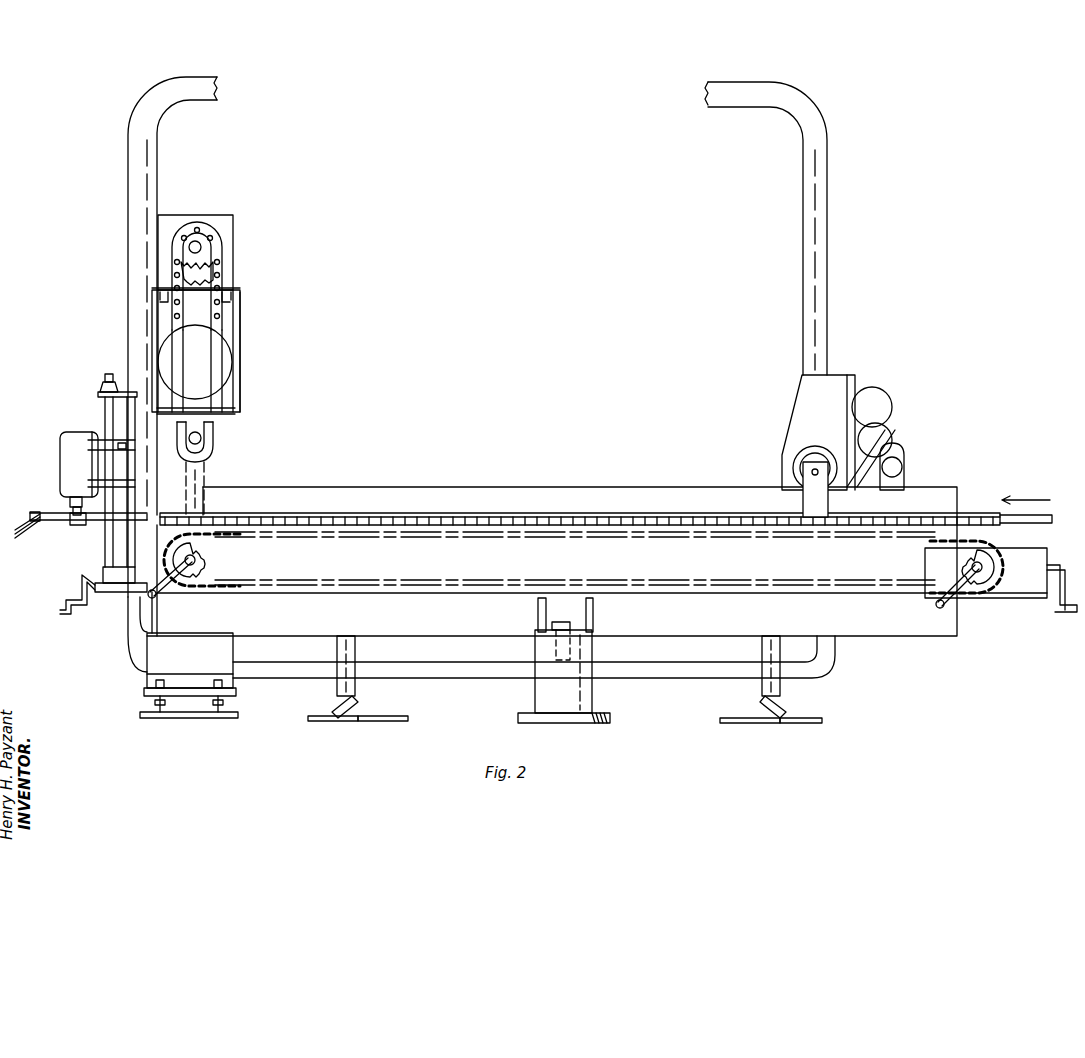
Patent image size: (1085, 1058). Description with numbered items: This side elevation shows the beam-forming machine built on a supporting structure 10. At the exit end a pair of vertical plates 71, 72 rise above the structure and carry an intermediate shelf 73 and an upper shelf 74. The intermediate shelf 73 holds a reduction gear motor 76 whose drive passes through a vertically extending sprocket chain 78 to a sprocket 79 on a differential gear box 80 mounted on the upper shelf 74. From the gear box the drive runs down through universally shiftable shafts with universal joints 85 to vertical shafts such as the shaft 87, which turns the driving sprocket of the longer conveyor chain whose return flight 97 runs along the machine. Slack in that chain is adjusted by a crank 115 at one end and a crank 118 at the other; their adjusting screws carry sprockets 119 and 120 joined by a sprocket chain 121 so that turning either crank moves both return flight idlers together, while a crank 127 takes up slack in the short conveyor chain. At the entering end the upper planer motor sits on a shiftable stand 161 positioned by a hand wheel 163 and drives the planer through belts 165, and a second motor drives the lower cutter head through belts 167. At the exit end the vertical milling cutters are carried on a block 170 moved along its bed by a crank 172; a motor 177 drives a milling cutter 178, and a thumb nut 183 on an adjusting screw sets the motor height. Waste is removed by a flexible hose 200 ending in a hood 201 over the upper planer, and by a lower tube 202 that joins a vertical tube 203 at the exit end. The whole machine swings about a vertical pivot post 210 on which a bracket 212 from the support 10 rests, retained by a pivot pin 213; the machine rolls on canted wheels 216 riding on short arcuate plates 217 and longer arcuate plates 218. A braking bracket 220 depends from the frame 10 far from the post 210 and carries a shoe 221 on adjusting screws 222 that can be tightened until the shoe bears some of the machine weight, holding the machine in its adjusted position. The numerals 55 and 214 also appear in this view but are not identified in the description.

The supporting structure 10 is at (912, 637).
The electrical wiring 55 is at (21, 528).
The vertical plate 71 is at (152, 320).
The vertical plate 72 is at (240, 383).
The intermediate shelf 73 is at (236, 413).
The upper shelf 74 is at (235, 292).
The reduction gear motor 76 is at (215, 352).
The sprocket chain 78 is at (215, 270).
The sprocket 79 is at (205, 245).
The differential gear box 80 is at (220, 215).
The universal joint 85 is at (214, 446).
The vertical shaft 87 is at (188, 488).
The return flight 97 is at (470, 520).
The crank 115 is at (935, 607).
The crank 118 is at (158, 595).
The sprocket 119 is at (950, 566).
The sprocket 120 is at (207, 560).
The sprocket chain 121 is at (935, 580).
The crank 127 is at (1062, 615).
The stand 161 is at (843, 377).
The hand wheel 163 is at (794, 470).
The belts 165 is at (845, 452).
The belts 167 is at (875, 463).
The block 170 is at (113, 585).
The crank 172 is at (68, 610).
The motor 177 is at (65, 471).
The milling cutter 178 is at (81, 527).
The thumb nut 183 is at (103, 387).
The flexible hose 200 is at (830, 252).
The hood 201 is at (800, 407).
The tube 202 is at (670, 672).
The vertical tube 203 is at (138, 190).
The vertical pivot post 210 is at (593, 691).
The bracket 212 is at (594, 617).
The pivot pin 213 is at (560, 622).
The leg 214 is at (357, 667).
The canted wheel 216 is at (360, 700).
The short arcuate plate 217 is at (308, 716).
The longer arcuate plate 218 is at (408, 718).
The bracket 220 is at (152, 657).
The shoe 221 is at (190, 718).
The adjusting screws 222 is at (213, 706).